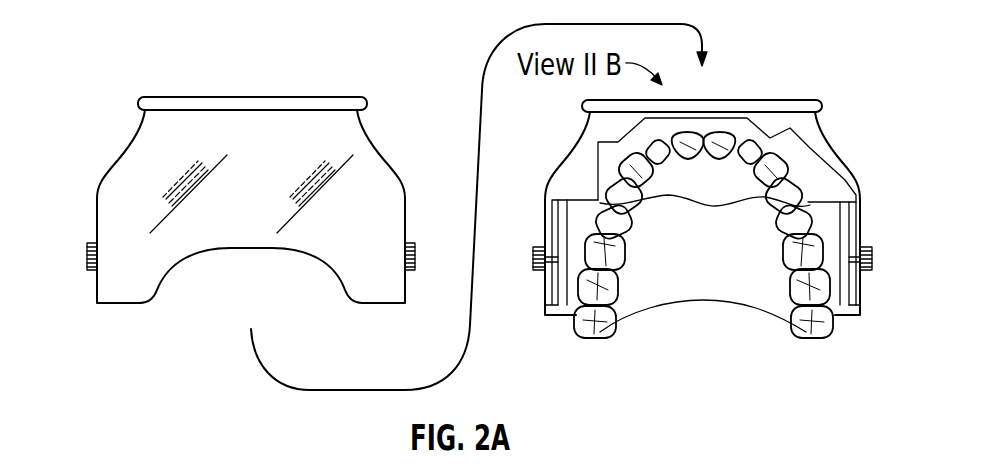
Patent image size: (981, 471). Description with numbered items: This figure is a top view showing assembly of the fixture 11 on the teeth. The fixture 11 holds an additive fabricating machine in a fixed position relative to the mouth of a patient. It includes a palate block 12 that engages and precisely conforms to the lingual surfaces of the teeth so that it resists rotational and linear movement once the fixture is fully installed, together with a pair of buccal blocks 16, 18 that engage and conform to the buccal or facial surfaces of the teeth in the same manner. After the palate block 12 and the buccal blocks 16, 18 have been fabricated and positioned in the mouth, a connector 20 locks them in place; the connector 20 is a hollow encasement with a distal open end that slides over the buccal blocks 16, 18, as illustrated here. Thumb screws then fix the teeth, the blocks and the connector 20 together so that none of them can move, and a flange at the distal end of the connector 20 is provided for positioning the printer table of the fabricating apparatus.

The fixture 11 is at (236, 207).
The palate block 12 is at (714, 202).
The buccal block 16 is at (582, 213).
The buccal block 18 is at (824, 208).
The connector 20 is at (143, 152).